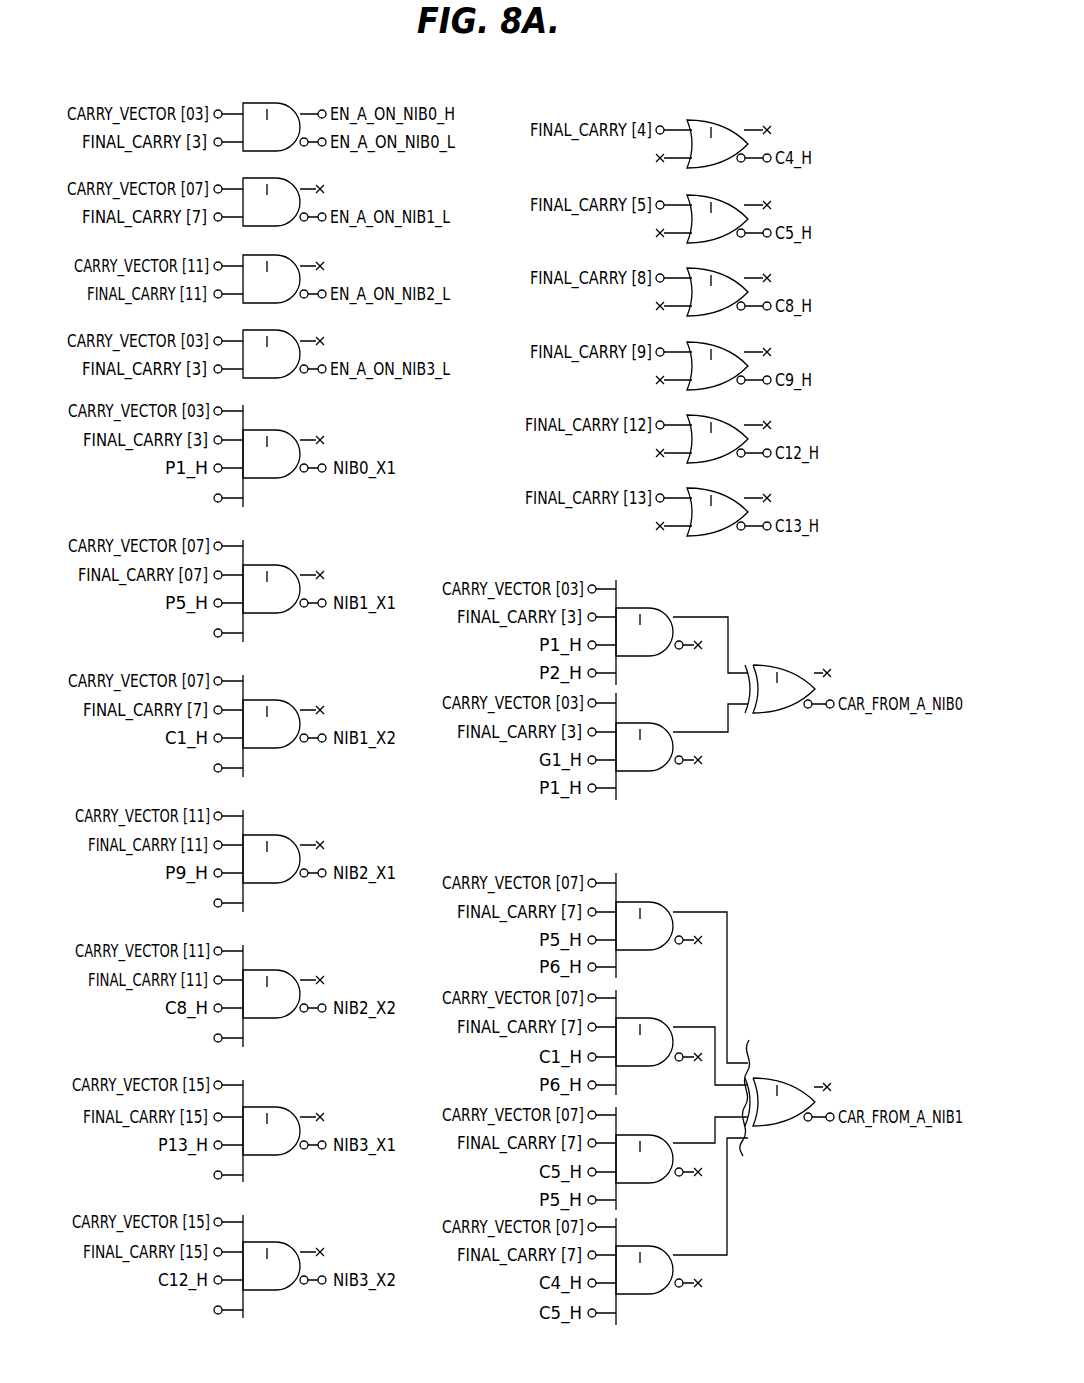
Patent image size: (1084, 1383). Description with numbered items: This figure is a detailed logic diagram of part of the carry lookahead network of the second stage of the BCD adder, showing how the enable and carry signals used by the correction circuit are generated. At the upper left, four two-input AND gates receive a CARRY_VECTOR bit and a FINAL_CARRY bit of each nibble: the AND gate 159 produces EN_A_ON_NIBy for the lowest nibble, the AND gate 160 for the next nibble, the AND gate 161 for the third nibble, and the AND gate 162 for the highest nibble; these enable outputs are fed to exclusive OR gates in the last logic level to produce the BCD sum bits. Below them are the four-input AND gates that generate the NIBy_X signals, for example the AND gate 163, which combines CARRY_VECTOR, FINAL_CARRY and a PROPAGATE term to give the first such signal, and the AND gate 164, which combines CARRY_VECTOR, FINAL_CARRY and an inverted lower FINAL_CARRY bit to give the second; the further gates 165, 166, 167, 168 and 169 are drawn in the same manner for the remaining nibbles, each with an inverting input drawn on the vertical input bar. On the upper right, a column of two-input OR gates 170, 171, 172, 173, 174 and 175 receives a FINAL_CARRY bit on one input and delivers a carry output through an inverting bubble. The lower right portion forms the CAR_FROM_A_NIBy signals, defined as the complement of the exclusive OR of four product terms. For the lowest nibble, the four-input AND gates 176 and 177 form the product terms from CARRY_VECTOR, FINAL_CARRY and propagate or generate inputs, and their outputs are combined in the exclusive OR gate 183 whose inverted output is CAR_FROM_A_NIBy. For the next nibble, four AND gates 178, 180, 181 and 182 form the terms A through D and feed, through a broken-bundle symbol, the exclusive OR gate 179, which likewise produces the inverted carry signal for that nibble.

The AND gate 159 is at (275, 103).
The AND gate 160 is at (271, 182).
The AND gate 161 is at (281, 257).
The AND gate 162 is at (287, 330).
The 4-input AND gate 163 is at (265, 430).
The 4-input AND gate 164 is at (280, 565).
The AND gate L926 165 is at (284, 700).
The AND gate L927 166 is at (288, 835).
The AND gate L928 167 is at (284, 970).
The AND gate L929 168 is at (277, 1107).
The AND gate L930 169 is at (268, 1242).
The OR gate L912 170 is at (718, 120).
The OR gate L913 171 is at (718, 195).
The OR gate L914 172 is at (693, 268).
The OR gate L915 173 is at (696, 342).
The OR gate L916 174 is at (721, 415).
The OR gate L917 175 is at (721, 536).
The AND gate L940 176 is at (647, 608).
The AND gate L941 177 is at (647, 723).
The AND gate L942 178 is at (660, 902).
The XOR gate L947 179 is at (777, 1078).
The AND gate L943 180 is at (638, 1018).
The AND gate L944 181 is at (647, 1135).
The AND gate L945 182 is at (653, 1246).
The XOR gate L946 183 is at (773, 665).